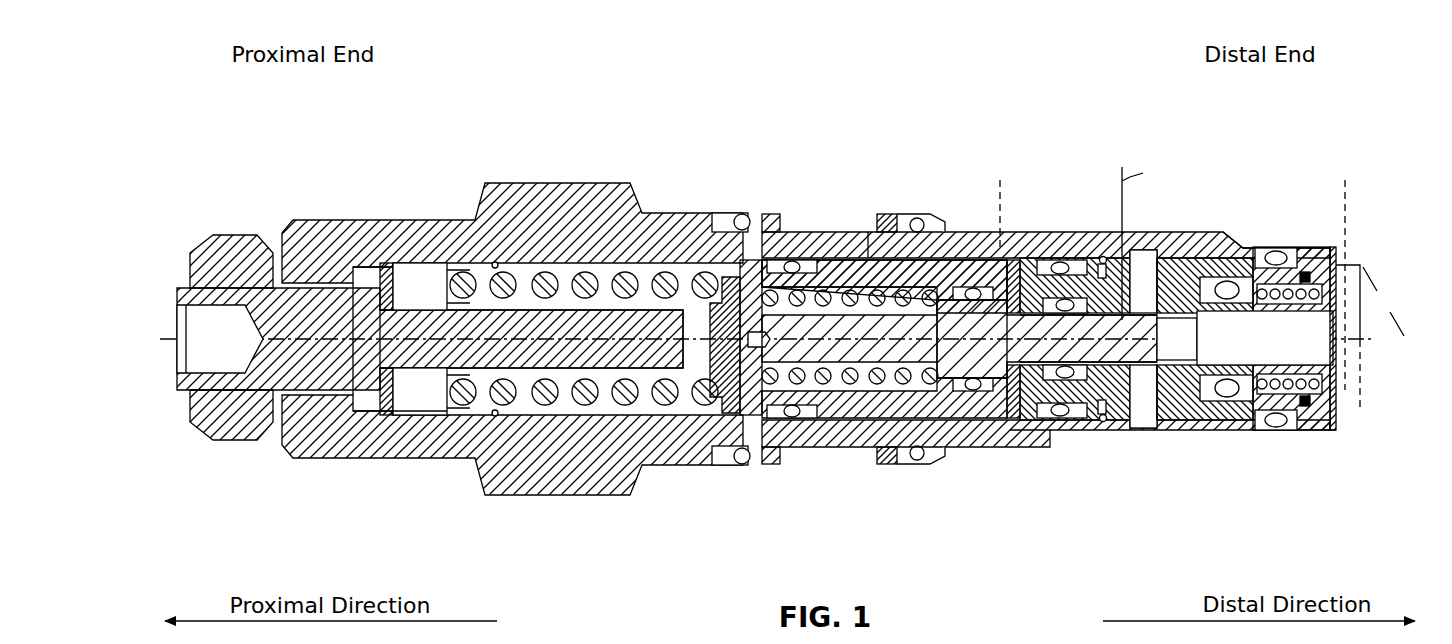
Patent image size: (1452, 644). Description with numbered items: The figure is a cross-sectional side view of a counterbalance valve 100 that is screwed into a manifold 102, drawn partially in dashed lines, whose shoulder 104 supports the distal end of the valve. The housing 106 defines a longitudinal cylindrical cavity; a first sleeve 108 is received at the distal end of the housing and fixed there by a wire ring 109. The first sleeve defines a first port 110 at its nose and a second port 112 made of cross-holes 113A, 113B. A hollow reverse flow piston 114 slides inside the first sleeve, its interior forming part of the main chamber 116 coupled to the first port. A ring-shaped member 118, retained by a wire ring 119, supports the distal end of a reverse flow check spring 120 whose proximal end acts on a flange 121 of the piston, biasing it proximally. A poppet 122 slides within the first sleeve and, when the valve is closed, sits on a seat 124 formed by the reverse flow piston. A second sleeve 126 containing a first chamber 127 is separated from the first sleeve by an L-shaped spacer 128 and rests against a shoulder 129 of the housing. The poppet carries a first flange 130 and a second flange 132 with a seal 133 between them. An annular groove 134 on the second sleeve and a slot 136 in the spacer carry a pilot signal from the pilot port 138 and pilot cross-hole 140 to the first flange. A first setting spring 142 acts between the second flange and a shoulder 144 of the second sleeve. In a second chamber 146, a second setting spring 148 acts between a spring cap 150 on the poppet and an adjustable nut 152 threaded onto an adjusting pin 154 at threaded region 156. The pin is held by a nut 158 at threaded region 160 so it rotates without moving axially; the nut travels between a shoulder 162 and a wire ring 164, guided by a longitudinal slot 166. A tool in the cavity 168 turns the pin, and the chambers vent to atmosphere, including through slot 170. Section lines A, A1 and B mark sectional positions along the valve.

The counterbalance valve 100 is at (358, 150).
The manifold 102 is at (1400, 324).
The shoulder 104 is at (1338, 258).
The housing 106 is at (580, 183).
The first sleeve 108 is at (1300, 430).
The wire ring 109 is at (1101, 258).
The first port 110 is at (1340, 356).
The second port 112 is at (1208, 228).
The cross-hole 113A is at (1143, 260).
The cross-hole 113B is at (1125, 418).
The reverse flow piston 114 is at (1143, 405).
The main chamber 116 is at (1186, 348).
The ring-shaped member 118 is at (1336, 424).
The wire ring 119 is at (1302, 272).
The reverse flow check spring 120 is at (1273, 382).
The flange 121 is at (1243, 390).
The poppet 122 is at (1090, 350).
The seat 124 is at (1169, 296).
The second sleeve 126 is at (826, 268).
The first chamber 127 is at (773, 384).
The spacer 128 is at (1001, 380).
The shoulder 129 is at (740, 254).
The first flange 130 is at (972, 380).
The second flange 132 is at (916, 455).
The seal 133 is at (946, 375).
The annular groove 134 is at (898, 254).
The slot 136 is at (1012, 256).
The pilot port 138 is at (840, 228).
The pilot cross-hole 140 is at (868, 234).
The first setting spring 142 is at (809, 390).
The shoulder 144 is at (752, 418).
The second chamber 146 is at (646, 406).
The second setting spring 148 is at (585, 395).
The spring cap 150 is at (726, 290).
The adjustable nut 152 is at (397, 262).
The adjusting pin 154 is at (435, 370).
The threaded region 156 is at (438, 300).
The nut 158 is at (238, 236).
The threaded region 160 is at (238, 394).
The shoulder 162 is at (372, 392).
The wire ring 164 is at (497, 262).
The longitudinal slot 166 is at (396, 418).
The cavity 168 is at (175, 327).
The slot 170 is at (318, 280).
The section line A is at (1422, 199).
The section line A1 is at (1148, 241).
The section line B is at (925, 199).